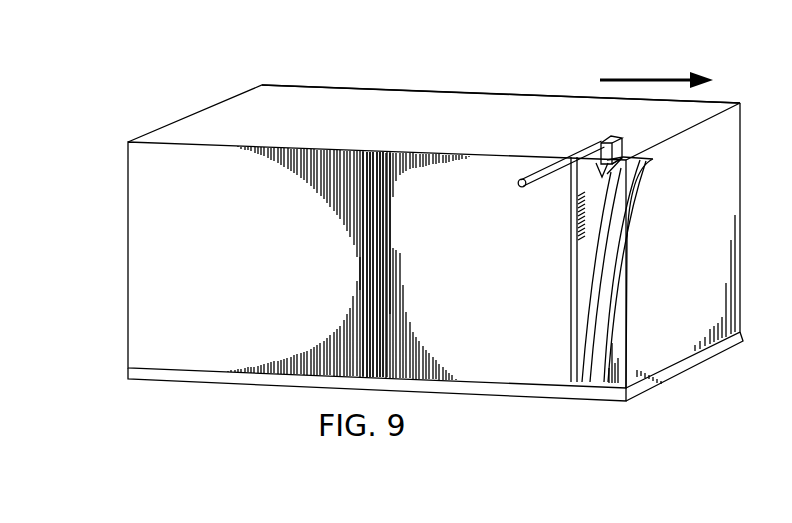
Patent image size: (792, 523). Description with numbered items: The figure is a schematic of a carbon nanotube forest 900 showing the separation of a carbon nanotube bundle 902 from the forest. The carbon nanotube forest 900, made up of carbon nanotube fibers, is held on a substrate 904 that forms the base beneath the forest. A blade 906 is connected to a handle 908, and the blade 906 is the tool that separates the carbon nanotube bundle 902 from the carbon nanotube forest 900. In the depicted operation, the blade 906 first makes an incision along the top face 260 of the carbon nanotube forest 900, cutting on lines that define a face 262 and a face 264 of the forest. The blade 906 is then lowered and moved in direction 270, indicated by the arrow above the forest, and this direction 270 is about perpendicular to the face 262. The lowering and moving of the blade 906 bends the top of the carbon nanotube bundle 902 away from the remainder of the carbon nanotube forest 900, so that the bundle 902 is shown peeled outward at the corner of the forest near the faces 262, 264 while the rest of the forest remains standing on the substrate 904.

The face 260 is at (457, 96).
The direction 270 is at (655, 78).
The face 262 is at (586, 270).
The face 264 is at (622, 297).
The carbon nanotube forest 900 is at (136, 289).
The carbon nanotube bundle 902 is at (590, 327).
The substrate 904 is at (130, 372).
The blade 906 is at (628, 173).
The handle 908 is at (571, 154).